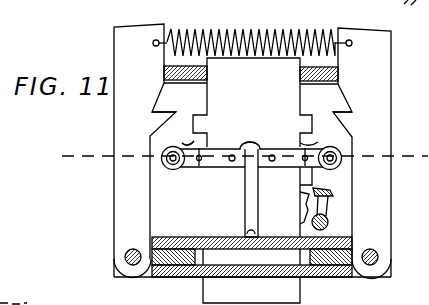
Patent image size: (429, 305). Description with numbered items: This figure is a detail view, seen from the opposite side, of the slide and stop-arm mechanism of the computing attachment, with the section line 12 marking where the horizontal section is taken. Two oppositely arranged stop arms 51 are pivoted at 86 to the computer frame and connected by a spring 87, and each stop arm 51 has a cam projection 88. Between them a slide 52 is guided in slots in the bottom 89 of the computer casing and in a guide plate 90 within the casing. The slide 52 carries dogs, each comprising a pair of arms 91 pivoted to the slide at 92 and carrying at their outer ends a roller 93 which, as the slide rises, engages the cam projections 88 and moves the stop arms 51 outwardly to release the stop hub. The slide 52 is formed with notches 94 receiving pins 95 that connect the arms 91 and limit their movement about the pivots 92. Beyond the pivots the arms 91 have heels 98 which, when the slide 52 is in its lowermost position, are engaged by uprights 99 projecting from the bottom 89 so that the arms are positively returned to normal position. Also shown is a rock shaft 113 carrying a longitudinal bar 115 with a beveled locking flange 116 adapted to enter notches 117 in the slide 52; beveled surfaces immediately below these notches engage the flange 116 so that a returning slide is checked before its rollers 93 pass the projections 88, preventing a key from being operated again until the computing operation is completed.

The section line 12 is at (235, 156).
The stop arm 51 is at (252, 151).
The slide 52 is at (250, 102).
The pivot 86 is at (124, 258).
The spring 87 is at (250, 31).
The cam projection 88 is at (159, 126).
The bottom of the computer casing 89 is at (184, 276).
The guide plate 90 is at (251, 85).
The arm 91 is at (210, 164).
The pivot 92 is at (233, 154).
The roller 93 is at (171, 165).
The notch 94 is at (205, 136).
The pin 95 is at (199, 163).
The heel 98 is at (248, 148).
The upright 99 is at (251, 221).
The rock shaft 113 is at (329, 220).
The longitudinal bar 115 is at (330, 204).
The locking flange 116 is at (334, 192).
The notch 117 is at (298, 192).